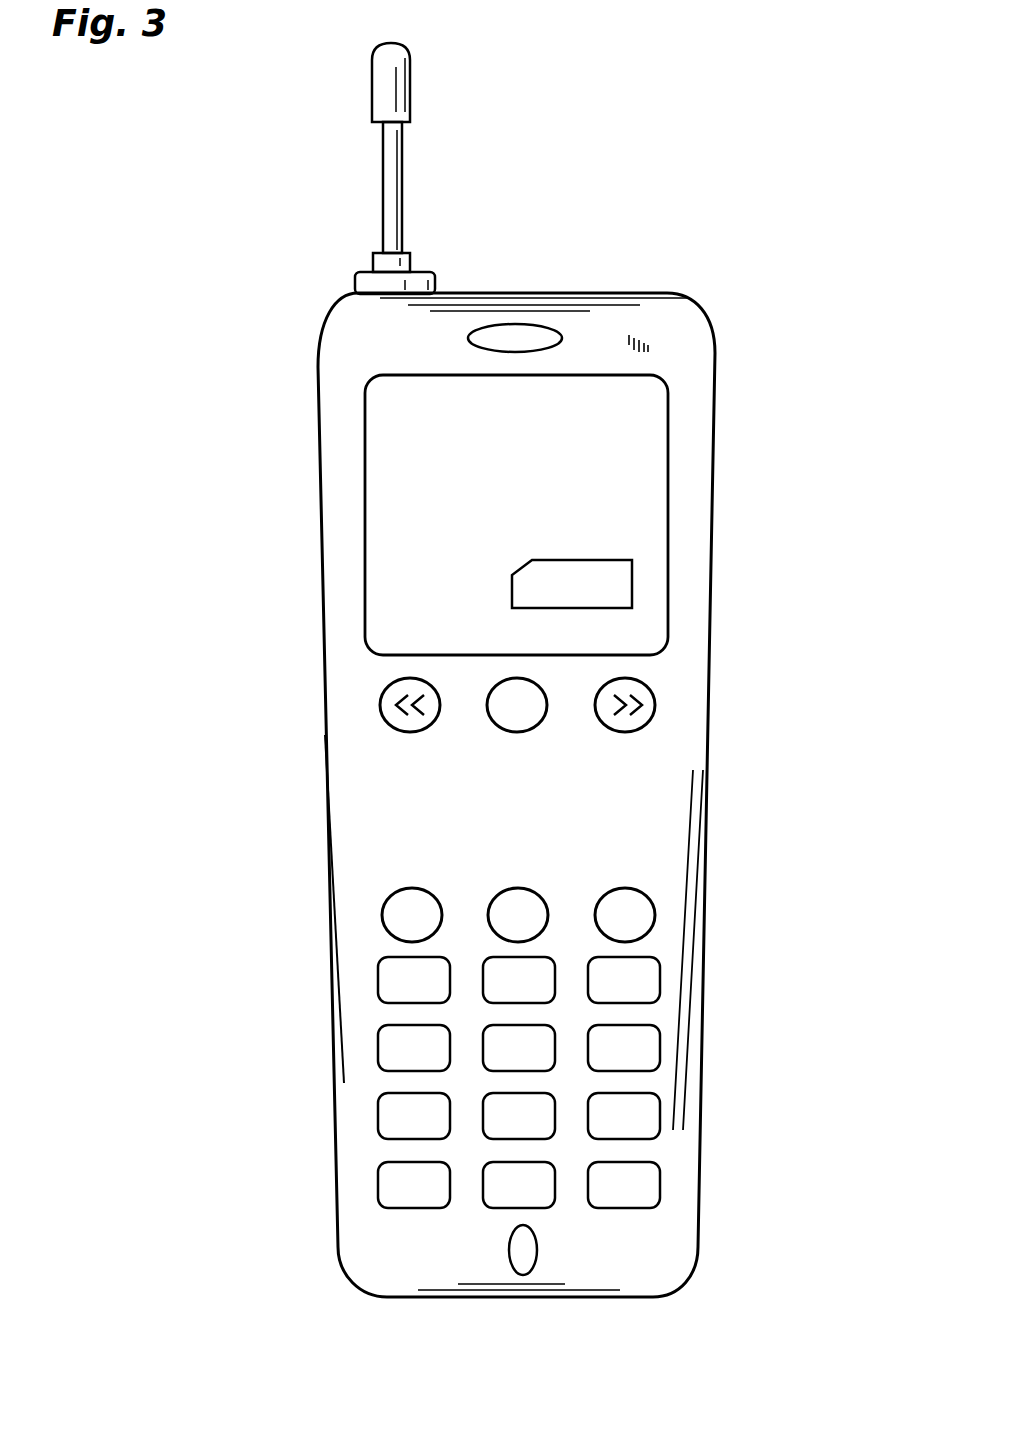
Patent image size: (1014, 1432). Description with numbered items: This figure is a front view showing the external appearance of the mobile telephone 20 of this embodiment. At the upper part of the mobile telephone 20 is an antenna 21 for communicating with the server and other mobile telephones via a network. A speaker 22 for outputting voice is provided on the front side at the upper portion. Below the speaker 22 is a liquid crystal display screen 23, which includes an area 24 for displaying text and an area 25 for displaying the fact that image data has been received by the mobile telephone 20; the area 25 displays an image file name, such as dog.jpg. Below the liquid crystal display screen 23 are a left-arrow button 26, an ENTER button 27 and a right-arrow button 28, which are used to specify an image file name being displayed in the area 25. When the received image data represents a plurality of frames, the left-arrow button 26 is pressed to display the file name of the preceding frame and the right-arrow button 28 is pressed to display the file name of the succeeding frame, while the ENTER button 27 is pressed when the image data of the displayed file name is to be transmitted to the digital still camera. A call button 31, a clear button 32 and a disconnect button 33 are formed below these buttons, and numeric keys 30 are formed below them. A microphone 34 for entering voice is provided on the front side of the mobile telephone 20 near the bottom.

The mobile telephone 20 is at (637, 220).
The antenna 21 is at (410, 103).
The speaker 22 is at (515, 325).
The liquid crystal display screen 23 is at (372, 592).
The area for displaying text 24 is at (573, 494).
The area for displaying image presence 25 is at (523, 590).
The left-arrow button 26 is at (400, 733).
The ENTER button 27 is at (487, 712).
The right-arrow button 28 is at (632, 730).
The numeric keys 30 is at (677, 993).
The call button 31 is at (398, 891).
The clear button 32 is at (548, 915).
The disconnect button 33 is at (657, 917).
The microphone 34 is at (538, 1252).